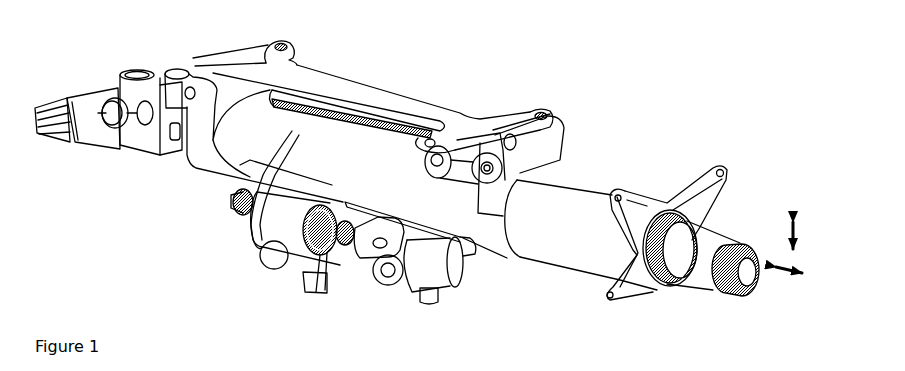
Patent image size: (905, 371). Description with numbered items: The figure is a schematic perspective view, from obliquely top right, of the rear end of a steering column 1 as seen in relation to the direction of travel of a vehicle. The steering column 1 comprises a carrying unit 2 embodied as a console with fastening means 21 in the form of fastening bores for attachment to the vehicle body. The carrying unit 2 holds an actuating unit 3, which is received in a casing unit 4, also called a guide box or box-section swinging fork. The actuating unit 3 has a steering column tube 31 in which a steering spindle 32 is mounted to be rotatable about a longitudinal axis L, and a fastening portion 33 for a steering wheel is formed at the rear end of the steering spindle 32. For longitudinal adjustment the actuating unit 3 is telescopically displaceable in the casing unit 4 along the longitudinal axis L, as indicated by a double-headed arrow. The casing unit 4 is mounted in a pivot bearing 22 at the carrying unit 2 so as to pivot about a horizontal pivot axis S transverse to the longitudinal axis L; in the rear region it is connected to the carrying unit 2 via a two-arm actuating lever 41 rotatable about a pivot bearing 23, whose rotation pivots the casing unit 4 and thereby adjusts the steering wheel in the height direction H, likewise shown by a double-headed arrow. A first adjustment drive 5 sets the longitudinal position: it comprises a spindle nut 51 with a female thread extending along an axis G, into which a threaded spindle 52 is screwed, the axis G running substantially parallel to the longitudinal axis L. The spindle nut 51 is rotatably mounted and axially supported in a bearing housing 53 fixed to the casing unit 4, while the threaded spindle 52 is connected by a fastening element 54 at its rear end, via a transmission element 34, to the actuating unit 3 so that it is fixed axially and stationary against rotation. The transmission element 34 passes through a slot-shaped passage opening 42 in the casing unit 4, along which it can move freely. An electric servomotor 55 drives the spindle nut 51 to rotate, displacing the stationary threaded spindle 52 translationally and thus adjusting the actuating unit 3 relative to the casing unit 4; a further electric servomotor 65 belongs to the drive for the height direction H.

The steering column 1 is at (459, 50).
The carrying unit 2 is at (383, 97).
The fastening means 21 is at (283, 42).
The pivot bearing 22 is at (192, 86).
The pivot bearing 23 is at (487, 162).
The pivot axis S is at (309, 65).
The actuating unit 3 is at (625, 172).
The steering column tube 31 is at (563, 197).
The steering spindle 32 is at (704, 245).
The fastening portion 33 is at (729, 290).
The transmission element 34 is at (420, 262).
The casing unit 4 is at (215, 160).
The actuating lever 41 is at (530, 139).
The passage opening 42 is at (478, 252).
The first adjustment drive 5 is at (254, 268).
The spindle nut 51 is at (307, 265).
The threaded spindle 52 is at (332, 270).
The bearing housing 53 is at (272, 210).
The fastening element 54 is at (371, 250).
The electric servomotor 55 is at (364, 268).
The electric servomotor 65 is at (427, 290).
The axis G is at (230, 203).
The height direction H is at (790, 236).
The longitudinal axis L is at (797, 286).